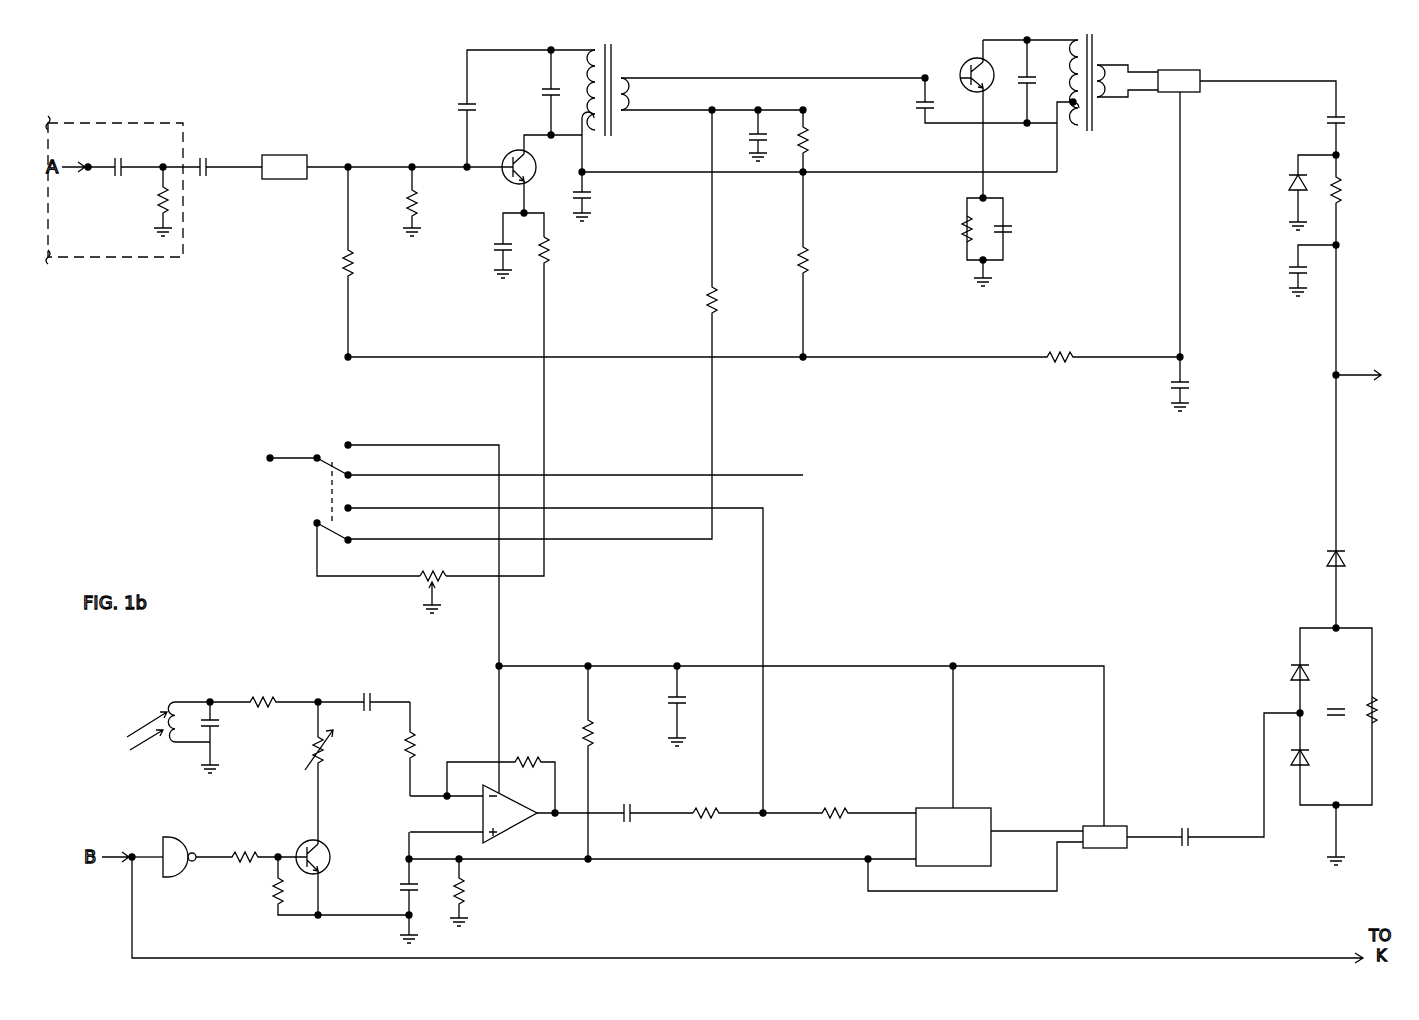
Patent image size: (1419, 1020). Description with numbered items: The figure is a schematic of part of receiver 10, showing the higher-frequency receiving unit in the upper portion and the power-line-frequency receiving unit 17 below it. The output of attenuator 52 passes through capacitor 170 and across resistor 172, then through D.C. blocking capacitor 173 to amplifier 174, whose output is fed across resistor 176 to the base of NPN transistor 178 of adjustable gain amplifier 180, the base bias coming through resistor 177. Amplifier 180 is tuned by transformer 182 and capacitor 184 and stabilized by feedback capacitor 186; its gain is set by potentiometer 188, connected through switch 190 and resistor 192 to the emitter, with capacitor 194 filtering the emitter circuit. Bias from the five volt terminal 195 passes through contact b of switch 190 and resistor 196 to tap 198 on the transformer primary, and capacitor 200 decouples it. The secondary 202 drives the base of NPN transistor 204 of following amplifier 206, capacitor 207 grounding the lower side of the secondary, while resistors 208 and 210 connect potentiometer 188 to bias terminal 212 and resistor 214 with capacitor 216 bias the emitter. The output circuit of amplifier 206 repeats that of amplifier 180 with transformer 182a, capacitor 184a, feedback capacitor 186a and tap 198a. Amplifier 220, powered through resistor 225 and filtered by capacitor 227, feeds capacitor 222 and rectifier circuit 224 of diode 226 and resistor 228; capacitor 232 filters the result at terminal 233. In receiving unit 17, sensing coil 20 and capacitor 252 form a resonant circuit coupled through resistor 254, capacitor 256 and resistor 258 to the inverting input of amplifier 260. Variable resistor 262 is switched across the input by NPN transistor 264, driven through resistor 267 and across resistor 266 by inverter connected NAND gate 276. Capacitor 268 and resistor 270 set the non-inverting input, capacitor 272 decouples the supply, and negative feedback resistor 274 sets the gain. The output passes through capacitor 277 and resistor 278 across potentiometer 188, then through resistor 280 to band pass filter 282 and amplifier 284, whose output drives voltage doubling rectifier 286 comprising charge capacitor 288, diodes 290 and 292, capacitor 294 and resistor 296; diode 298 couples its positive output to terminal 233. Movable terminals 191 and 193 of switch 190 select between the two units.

The receiver 10 is at (934, 531).
The 120 Hz receiving unit 17 is at (662, 769).
The 120 Hz sensing coil 20 is at (171, 748).
The attenuator 52 is at (84, 239).
The capacitor 170 is at (122, 160).
The resistor 172 is at (160, 207).
The D.C. blocking capacitor 173 is at (210, 155).
The amplifier 174 is at (286, 179).
The resistor 176 is at (419, 198).
The resistor 177 is at (340, 262).
The NPN transistor 178 is at (534, 160).
The adjustable gain amplifier 180 is at (753, 119).
The transformer 182 is at (615, 62).
The capacitor 184 is at (548, 104).
The feedback capacitor 186 is at (464, 119).
The potentiometer 188 is at (442, 598).
The switch 190 is at (321, 502).
The moveable terminal 191 is at (336, 454).
The resistor 192 is at (548, 255).
The movable terminal 193 is at (317, 536).
The capacitor 194 is at (497, 257).
The +5 volt terminal 195 is at (268, 454).
The resistor 196 is at (792, 259).
The tap 198 is at (617, 132).
The capacitor 200 is at (590, 209).
The secondary 202 is at (632, 92).
The NPN transistor 204 is at (968, 60).
The amplifier 206 is at (1080, 94).
The capacitor 207 is at (754, 134).
The resistor 208 is at (723, 312).
The resistor 210 is at (811, 140).
The bias terminal 212 is at (808, 176).
The resistor 214 is at (959, 231).
The capacitor 216 is at (1026, 238).
The amplifier 220 is at (1180, 68).
The capacitor 222 is at (1332, 121).
The rectifier circuit 224 is at (1312, 225).
The resistor 225 is at (1054, 353).
The diode 226 is at (1292, 170).
The capacitor 227 is at (1188, 380).
The resistor 228 is at (1340, 186).
The capacitor 232 is at (1286, 266).
The terminal 233 is at (1328, 379).
The transformer 182a is at (1094, 116).
The capacitor 184a is at (1029, 80).
The feedback capacitor 186a is at (920, 102).
The tap 198a is at (1074, 105).
The capacitor 252 is at (223, 732).
The resistor 254 is at (269, 695).
The capacitor 256 is at (371, 695).
The resistor 258 is at (416, 740).
The amplifier 260 is at (513, 835).
The variable resistor 262 is at (326, 756).
The NPN transistor 264 is at (331, 855).
The resistor 266 is at (270, 898).
The resistor 267 is at (243, 845).
The capacitor 268 is at (397, 895).
The resistor 270 is at (471, 890).
The capacitor 272 is at (685, 696).
The negative feedback resistor 274 is at (530, 760).
The NAND gate 276 is at (181, 843).
The capacitor 277 is at (633, 806).
The resistor 278 is at (700, 806).
The resistor 280 is at (840, 805).
The 120 Hz band pass filter 282 is at (984, 807).
The amplifier 284 is at (1121, 827).
The voltage doubling rectifier circuit 286 is at (1315, 745).
The charge capacitor 288 is at (1197, 836).
The diode 290 is at (1292, 757).
The diode 292 is at (1288, 674).
The capacitor 294 is at (1348, 719).
The resistor 296 is at (1375, 722).
The diode 298 is at (1326, 560).